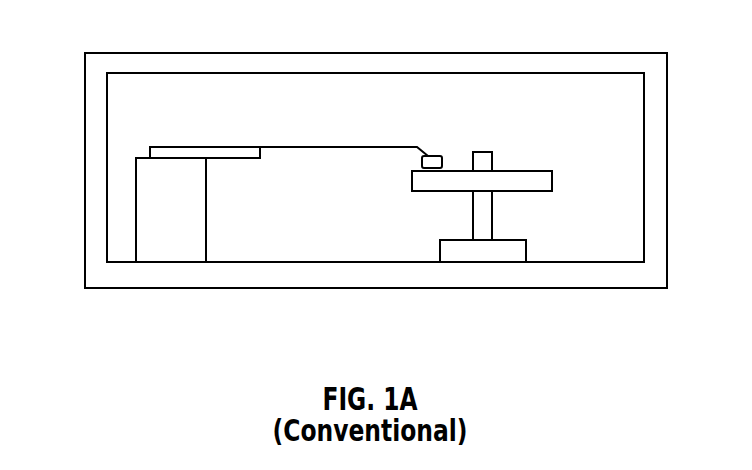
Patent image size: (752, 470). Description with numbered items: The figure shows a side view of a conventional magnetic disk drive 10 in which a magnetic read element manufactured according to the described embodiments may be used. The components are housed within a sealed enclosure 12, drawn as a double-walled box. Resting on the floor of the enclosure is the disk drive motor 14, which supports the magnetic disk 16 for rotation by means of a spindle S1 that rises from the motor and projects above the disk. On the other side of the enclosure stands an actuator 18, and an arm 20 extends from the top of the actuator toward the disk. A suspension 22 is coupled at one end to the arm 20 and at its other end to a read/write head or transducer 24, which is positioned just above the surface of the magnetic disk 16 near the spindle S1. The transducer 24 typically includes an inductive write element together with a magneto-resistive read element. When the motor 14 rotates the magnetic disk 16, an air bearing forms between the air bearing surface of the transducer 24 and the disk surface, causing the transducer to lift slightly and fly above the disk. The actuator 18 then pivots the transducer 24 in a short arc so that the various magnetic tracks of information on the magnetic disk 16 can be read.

The magnetic disk drive 10 is at (415, 44).
The sealed enclosure 12 is at (347, 279).
The disk drive motor 14 is at (440, 253).
The magnetic disk 16 is at (553, 182).
The actuator 18 is at (197, 246).
The arm 20 is at (222, 153).
The suspension 22 is at (343, 148).
The read/write head or transducer 24 is at (434, 156).
The spindle S1 is at (485, 157).